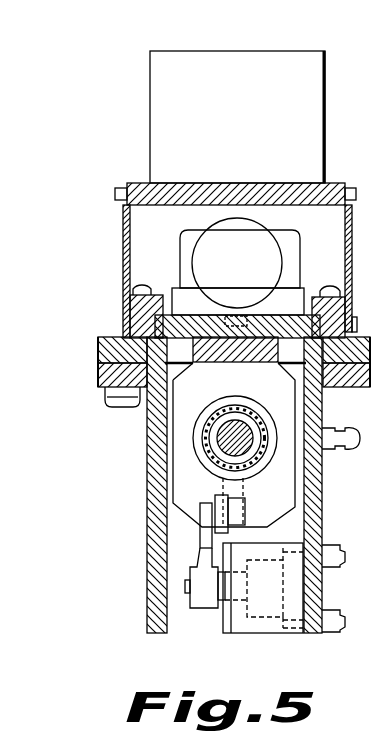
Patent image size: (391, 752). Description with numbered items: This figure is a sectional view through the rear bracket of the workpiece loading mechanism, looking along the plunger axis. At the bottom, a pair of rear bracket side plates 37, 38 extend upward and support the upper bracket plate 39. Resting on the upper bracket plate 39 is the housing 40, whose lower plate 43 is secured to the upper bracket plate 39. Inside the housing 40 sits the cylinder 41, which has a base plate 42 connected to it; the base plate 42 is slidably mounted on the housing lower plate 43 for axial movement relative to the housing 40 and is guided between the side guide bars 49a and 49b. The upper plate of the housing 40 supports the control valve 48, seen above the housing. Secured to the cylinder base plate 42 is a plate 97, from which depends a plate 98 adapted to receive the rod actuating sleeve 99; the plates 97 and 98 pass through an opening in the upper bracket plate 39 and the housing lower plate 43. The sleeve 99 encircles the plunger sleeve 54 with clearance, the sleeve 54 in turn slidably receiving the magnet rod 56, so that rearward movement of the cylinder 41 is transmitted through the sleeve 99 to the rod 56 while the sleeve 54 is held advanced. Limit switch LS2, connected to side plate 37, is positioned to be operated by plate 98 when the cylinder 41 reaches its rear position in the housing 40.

The control valve 48 is at (170, 52).
The housing 40 is at (126, 181).
The cylinder 41 is at (237, 263).
The base plate 42 is at (205, 318).
The side guide bar 49a is at (315, 292).
The side guide bar 49b is at (150, 290).
The lower plate 43 is at (98, 348).
The upper bracket plate 39 is at (98, 374).
The plate 97 is at (235, 350).
The side plate 38 is at (148, 512).
The side plate 37 is at (316, 514).
The plate 98 is at (234, 445).
The rod actuating sleeve 99 is at (214, 410).
The outer casing or sleeve 54 is at (214, 458).
The rod 56 is at (247, 426).
The limit switch LS2 is at (247, 634).